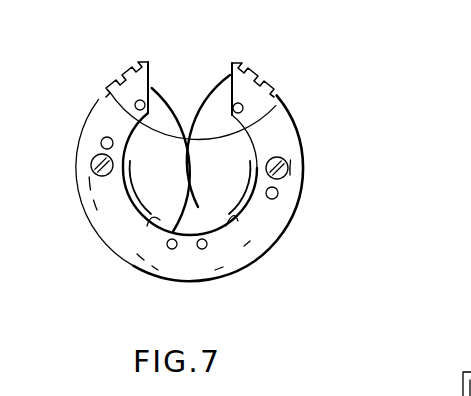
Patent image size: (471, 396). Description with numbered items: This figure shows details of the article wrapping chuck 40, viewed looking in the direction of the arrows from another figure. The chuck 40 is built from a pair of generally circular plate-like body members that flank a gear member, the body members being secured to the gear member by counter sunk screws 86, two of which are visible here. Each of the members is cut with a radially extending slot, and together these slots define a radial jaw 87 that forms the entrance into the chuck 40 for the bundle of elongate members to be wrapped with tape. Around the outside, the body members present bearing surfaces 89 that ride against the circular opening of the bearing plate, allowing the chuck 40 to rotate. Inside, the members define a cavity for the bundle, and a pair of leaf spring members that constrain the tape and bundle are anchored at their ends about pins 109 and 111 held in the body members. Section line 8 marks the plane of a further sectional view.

The article wrapping chuck 40 is at (367, 130).
The bearing surfaces 89 is at (243, 256).
The radial jaw 87 is at (232, 66).
The counter sunk screws 86 is at (92, 160).
The pin 109 is at (169, 249).
The pin 111 is at (203, 249).
The section line 8- 8 is at (331, 117).